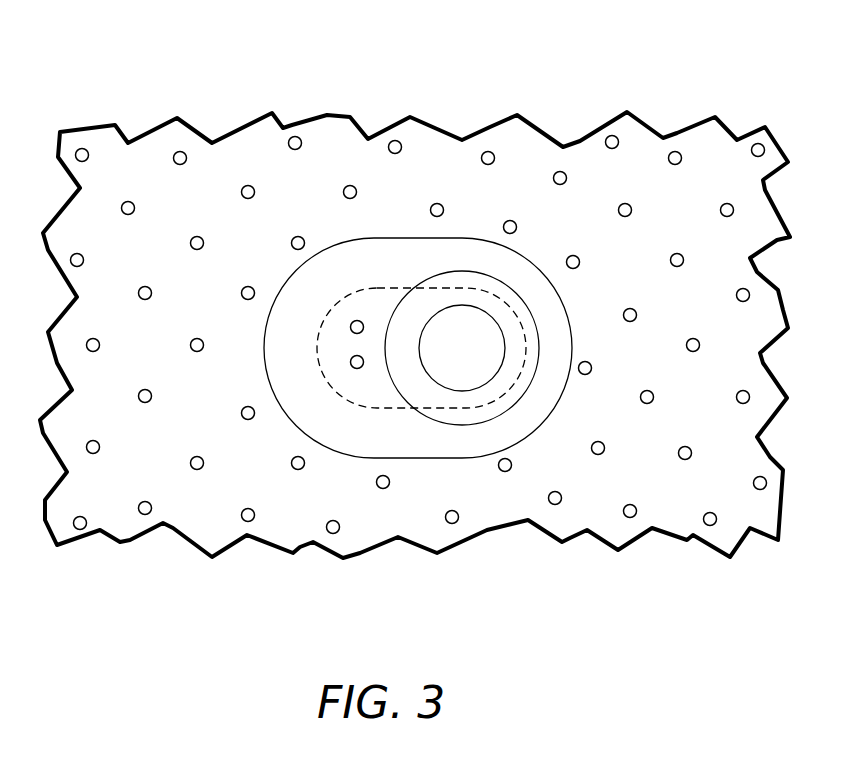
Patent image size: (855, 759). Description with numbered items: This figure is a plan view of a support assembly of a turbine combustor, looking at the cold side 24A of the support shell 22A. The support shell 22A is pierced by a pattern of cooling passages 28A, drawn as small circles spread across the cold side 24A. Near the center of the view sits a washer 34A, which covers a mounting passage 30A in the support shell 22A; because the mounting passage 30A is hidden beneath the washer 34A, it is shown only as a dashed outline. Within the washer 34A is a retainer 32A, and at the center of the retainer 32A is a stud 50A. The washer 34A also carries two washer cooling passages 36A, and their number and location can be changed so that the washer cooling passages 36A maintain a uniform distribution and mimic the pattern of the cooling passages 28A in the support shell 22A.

The support shell 22A is at (293, 108).
The cold side 24A is at (425, 163).
The cooling passage 28A is at (191, 239).
The mounting passage 30A is at (385, 287).
The retainer 32A is at (495, 277).
The washer 34A is at (570, 320).
The washer cooling passage 36A is at (351, 326).
The stud 50A is at (440, 386).